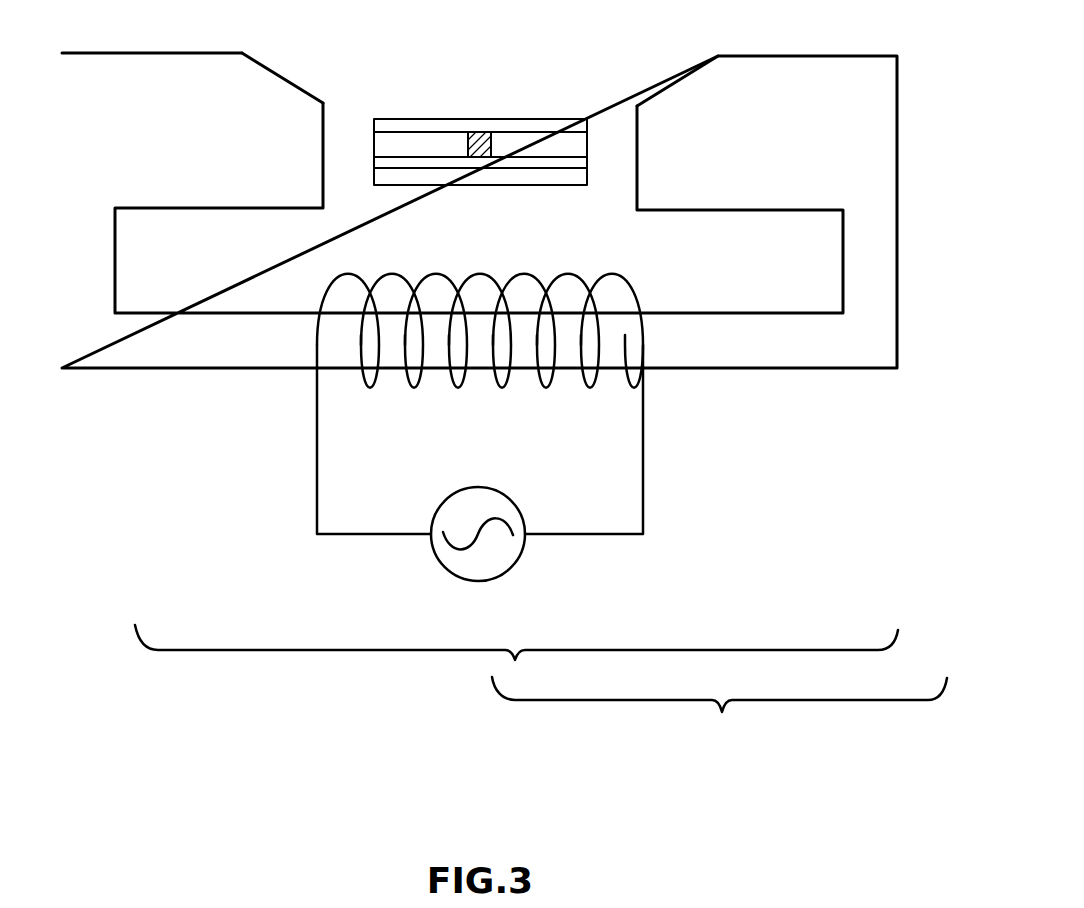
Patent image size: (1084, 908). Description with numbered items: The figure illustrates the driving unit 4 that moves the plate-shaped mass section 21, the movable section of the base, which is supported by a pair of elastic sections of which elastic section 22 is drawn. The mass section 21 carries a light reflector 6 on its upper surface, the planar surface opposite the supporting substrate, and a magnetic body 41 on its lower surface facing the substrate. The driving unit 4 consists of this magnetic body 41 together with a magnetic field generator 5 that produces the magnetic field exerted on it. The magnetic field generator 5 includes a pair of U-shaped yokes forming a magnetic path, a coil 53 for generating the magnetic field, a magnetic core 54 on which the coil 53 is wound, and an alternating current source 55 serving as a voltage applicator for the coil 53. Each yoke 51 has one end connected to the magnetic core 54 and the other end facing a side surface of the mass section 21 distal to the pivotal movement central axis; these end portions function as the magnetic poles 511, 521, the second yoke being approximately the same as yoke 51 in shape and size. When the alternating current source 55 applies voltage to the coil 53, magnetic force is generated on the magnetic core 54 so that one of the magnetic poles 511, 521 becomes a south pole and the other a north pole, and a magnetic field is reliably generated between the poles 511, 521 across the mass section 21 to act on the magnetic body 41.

The driving unit 4 is at (719, 711).
The magnetic body 41 is at (560, 163).
The magnetic field generator 5 is at (516, 659).
The yoke 51 is at (479, 326).
The magnetic pole 511 is at (647, 155).
The magnetic pole 521 is at (315, 152).
The coil 53 is at (634, 297).
The magnetic core 54 is at (390, 350).
The alternating current source 55 is at (513, 567).
The light reflector 6 is at (407, 118).
The mass section 21 is at (537, 143).
The elastic section 22 is at (473, 133).